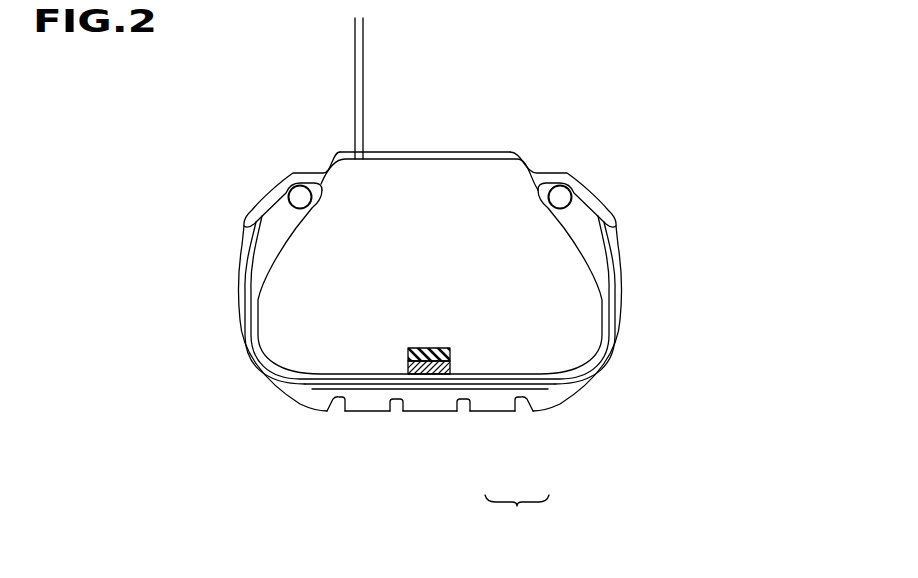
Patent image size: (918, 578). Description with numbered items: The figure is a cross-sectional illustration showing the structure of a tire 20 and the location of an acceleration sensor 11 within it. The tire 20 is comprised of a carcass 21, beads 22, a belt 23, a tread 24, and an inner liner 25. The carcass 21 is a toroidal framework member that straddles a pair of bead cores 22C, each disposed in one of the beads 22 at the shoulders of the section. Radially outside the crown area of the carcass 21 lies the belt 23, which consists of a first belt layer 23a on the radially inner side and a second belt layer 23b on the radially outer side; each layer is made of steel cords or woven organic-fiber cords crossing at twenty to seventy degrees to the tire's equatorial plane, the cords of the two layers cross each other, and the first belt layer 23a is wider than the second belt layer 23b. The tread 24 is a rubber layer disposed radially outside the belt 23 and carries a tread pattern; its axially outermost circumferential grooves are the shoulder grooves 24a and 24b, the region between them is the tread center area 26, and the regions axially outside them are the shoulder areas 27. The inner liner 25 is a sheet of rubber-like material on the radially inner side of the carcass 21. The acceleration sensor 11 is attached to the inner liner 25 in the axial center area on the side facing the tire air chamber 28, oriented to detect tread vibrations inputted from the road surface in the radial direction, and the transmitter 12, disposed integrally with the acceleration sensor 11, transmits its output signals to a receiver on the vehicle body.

The tire 20 is at (622, 254).
The carcass 21 is at (253, 298).
The beads 22 is at (266, 207).
The bead cores 22C is at (297, 197).
The belt 23 is at (517, 513).
The first belt layer 23a is at (477, 382).
The second belt layer 23b is at (496, 389).
The tread 24 is at (364, 402).
The shoulder groove 24a is at (333, 408).
The shoulder groove 24b is at (527, 412).
The inner liner 25 is at (377, 377).
The tread center area 26 is at (422, 422).
The shoulder areas 27 is at (268, 400).
The tire air chamber 28 is at (533, 353).
The acceleration sensor 11 is at (452, 374).
The transmitter 12 is at (437, 349).